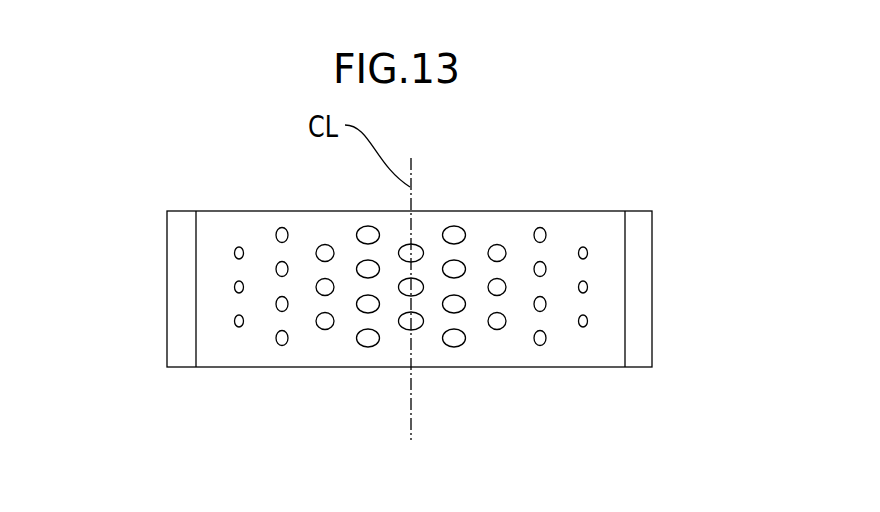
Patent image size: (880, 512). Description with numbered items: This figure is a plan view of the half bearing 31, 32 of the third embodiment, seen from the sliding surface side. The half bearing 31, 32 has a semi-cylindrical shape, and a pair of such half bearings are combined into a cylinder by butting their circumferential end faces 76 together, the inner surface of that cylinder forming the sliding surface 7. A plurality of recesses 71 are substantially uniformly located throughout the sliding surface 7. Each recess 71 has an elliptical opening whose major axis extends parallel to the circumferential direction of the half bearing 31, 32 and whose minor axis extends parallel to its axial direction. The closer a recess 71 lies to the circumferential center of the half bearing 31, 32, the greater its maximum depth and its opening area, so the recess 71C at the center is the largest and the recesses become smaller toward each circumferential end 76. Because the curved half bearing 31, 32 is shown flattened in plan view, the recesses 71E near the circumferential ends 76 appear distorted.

The sliding surface 7 is at (462, 357).
The half bearing 31 is at (560, 225).
The half bearing 32 is at (409, 289).
The recess 71 is at (360, 263).
The recess near circumferential end 71E is at (240, 323).
The center hole 71C is at (405, 328).
The circumferential end face 76 is at (183, 310).